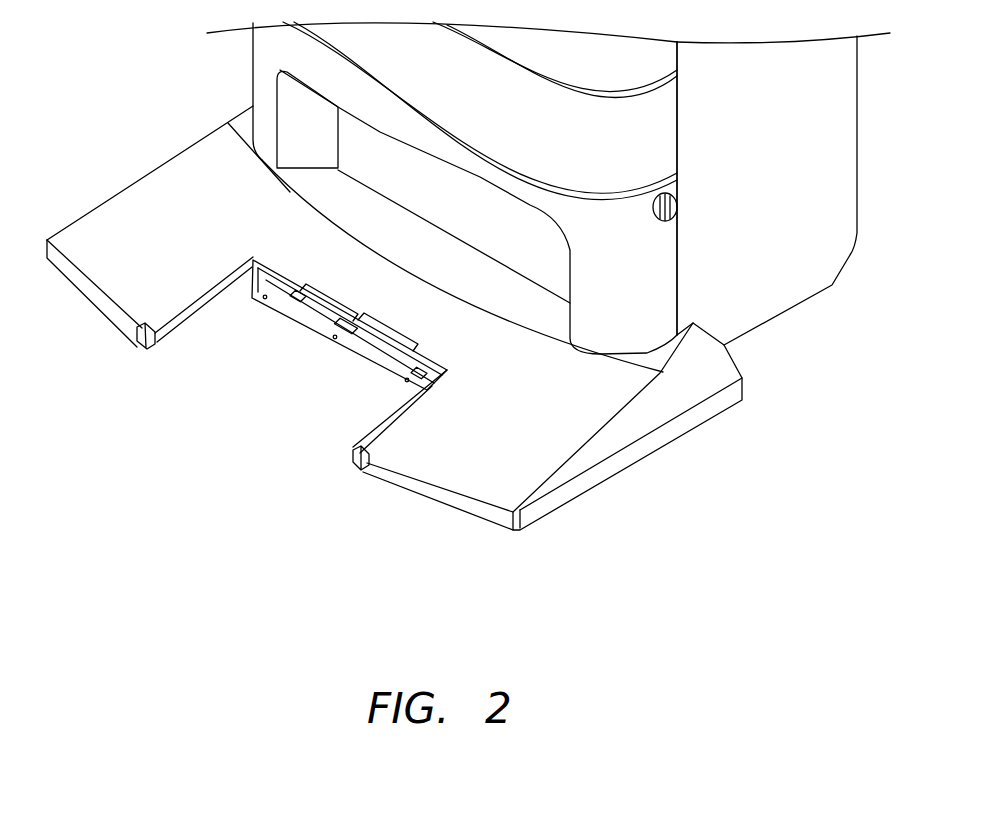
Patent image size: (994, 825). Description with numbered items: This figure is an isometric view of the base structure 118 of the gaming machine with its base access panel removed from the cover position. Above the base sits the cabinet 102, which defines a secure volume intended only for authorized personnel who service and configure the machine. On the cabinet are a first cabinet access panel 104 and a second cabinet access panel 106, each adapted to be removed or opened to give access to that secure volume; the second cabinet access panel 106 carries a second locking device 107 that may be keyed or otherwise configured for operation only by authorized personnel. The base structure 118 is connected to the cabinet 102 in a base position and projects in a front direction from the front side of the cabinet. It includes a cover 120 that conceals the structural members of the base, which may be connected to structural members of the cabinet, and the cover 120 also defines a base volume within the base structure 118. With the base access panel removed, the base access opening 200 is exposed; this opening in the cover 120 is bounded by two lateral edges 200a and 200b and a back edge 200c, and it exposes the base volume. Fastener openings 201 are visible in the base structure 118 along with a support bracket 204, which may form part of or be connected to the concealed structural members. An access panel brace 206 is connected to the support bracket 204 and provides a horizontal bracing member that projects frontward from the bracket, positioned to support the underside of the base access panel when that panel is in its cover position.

The cabinet 102 is at (886, 70).
The first cabinet access panel 104 is at (884, 157).
The second cabinet access panel 106 is at (884, 293).
The second locking device 107 is at (884, 232).
The base structure 118 is at (62, 130).
The cover 120 is at (550, 440).
The base access opening 200 is at (273, 378).
The lateral edge 200a is at (204, 296).
The lateral edge 200b is at (400, 412).
The back edge 200c is at (290, 280).
The fastener openings 201 is at (110, 380).
The support bracket 204 is at (348, 347).
The access panel brace 206 is at (375, 362).